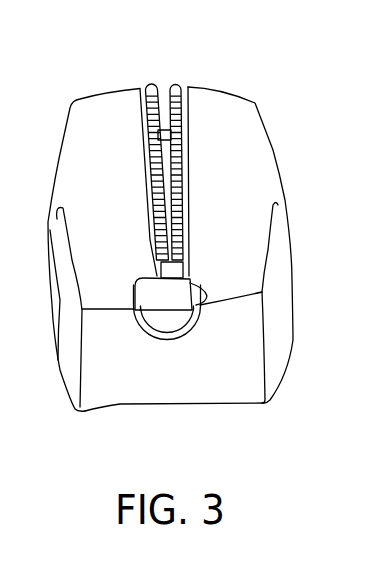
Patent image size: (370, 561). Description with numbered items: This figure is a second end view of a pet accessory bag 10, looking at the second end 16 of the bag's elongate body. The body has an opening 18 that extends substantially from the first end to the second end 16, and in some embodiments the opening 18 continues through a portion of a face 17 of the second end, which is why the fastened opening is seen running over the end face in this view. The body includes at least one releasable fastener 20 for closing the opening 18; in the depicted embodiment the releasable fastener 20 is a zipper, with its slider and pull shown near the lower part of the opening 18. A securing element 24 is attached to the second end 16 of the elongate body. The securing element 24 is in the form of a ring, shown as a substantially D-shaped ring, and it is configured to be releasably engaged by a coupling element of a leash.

The pet accessory bag 10 is at (238, 85).
The second end 16 is at (252, 371).
The face of the second end 17 is at (243, 275).
The opening 18 is at (167, 87).
The releasable fastener 20 is at (184, 271).
The securing element 24 is at (155, 340).